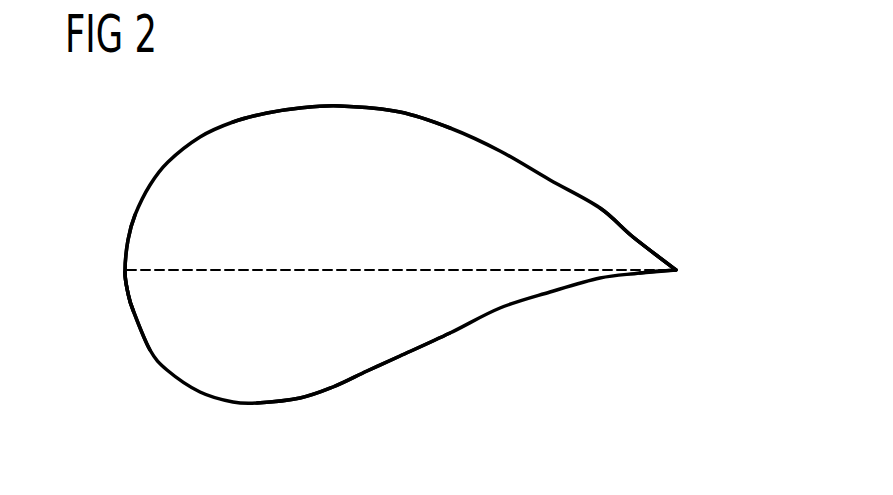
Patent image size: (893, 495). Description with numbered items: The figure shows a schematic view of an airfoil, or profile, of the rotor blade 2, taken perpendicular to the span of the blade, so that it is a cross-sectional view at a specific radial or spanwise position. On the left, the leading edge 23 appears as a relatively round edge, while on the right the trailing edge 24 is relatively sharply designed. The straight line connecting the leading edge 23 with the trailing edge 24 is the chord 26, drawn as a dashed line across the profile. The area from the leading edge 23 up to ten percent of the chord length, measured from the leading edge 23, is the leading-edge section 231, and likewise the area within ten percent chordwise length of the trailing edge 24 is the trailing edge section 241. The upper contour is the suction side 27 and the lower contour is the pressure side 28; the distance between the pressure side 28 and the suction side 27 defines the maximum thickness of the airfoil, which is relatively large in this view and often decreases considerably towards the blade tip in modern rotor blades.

The rotor blade 2 is at (612, 149).
The leading edge 23 is at (125, 270).
The leading-edge section 231 is at (134, 291).
The trailing edge 24 is at (678, 270).
The trailing edge section 241 is at (642, 242).
The chord 26 is at (348, 270).
The suction side 27 is at (340, 107).
The pressure side 28 is at (340, 385).